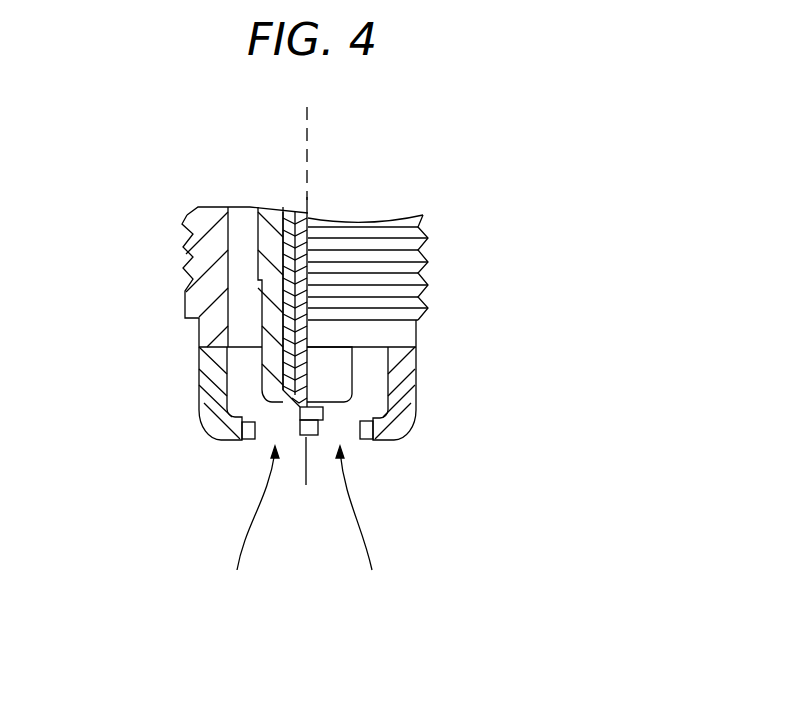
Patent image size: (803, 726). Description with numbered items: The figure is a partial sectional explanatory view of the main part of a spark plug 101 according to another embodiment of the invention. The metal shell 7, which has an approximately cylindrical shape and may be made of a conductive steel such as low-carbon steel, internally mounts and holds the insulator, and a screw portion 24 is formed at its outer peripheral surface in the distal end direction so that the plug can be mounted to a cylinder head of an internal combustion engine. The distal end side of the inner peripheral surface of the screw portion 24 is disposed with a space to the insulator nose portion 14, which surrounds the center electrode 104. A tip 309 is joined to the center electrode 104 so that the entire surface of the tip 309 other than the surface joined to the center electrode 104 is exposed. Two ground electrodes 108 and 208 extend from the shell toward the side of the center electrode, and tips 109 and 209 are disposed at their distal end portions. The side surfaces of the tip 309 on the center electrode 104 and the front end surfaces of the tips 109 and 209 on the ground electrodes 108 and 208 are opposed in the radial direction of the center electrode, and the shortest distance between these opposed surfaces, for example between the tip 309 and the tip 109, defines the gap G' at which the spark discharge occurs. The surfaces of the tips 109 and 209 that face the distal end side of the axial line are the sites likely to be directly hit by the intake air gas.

The spark plug 101 is at (555, 142).
The metal shell 7 is at (187, 258).
The insulator nose portion 14 is at (267, 301).
The screw portion 24 is at (427, 260).
The center electrode 104 is at (287, 412).
The tip 309 is at (318, 443).
The ground electrode 208 is at (203, 383).
The tip 209 is at (250, 440).
The ground electrode 108 is at (410, 375).
The tip 109 is at (368, 442).